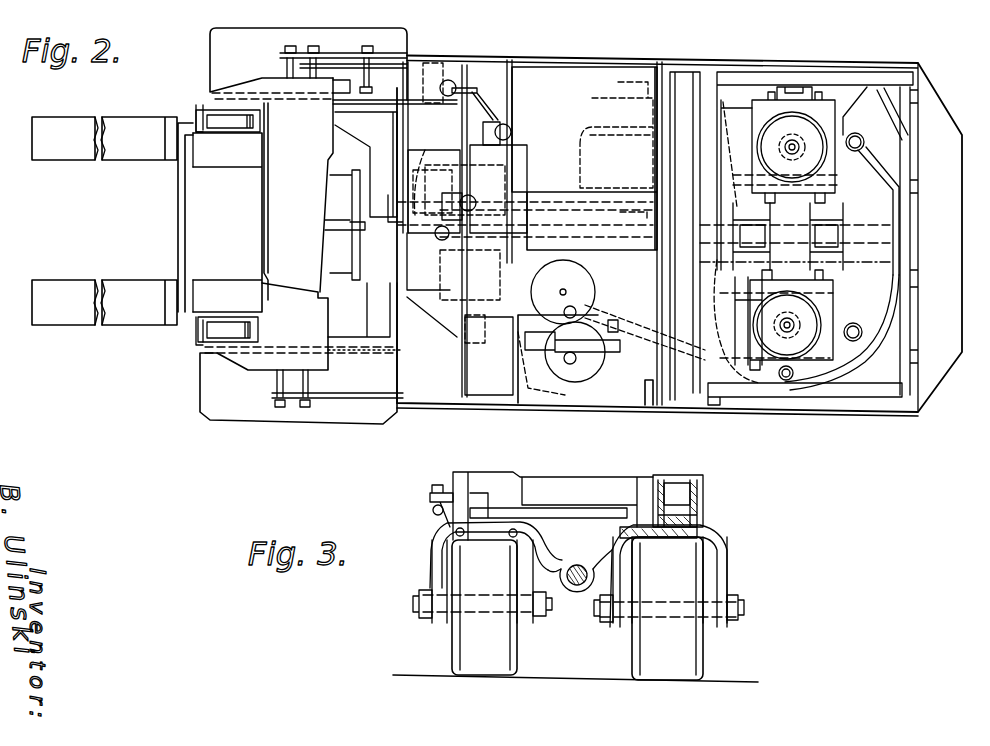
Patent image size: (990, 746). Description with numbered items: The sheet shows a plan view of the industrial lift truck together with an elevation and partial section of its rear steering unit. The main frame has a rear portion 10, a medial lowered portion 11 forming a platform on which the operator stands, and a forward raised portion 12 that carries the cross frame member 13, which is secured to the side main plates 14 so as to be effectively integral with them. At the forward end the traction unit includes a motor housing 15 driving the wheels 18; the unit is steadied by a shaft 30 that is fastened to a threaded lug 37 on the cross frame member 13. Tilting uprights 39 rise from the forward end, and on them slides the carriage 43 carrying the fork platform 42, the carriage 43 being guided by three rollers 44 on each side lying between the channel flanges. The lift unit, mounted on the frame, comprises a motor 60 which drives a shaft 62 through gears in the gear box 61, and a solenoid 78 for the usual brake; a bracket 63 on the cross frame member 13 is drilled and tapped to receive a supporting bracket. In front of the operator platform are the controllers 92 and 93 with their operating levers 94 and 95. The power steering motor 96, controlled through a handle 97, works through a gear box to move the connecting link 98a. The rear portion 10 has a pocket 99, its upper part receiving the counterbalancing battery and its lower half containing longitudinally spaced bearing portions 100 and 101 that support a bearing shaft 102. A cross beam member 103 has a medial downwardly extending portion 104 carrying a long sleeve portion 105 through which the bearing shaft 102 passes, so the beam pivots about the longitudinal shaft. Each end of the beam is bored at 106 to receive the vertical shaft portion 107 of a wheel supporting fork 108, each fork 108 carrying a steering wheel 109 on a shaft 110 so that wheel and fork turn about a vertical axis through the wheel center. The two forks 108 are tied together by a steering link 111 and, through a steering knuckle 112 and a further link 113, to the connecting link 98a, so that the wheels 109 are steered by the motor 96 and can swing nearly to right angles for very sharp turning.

In FIG. 2, the rear portion 10 is at (867, 412).
In FIG. 2, the medial lowered portion 11 is at (628, 402).
In FIG. 2, the forward raised portion 12 is at (403, 405).
In FIG. 2, the cross frame member 13 is at (380, 152).
In FIG. 2, the side main plates 14 is at (574, 58).
In FIG. 2, the motor housing 15 is at (337, 173).
In FIG. 2, the wheels 18 is at (365, 34).
In FIG. 2, the shaft 30 is at (338, 230).
In FIG. 2, the threaded lug 37 is at (370, 217).
In FIG. 2, the uprights 39 is at (198, 110).
In FIG. 2, the fork platform 42 is at (178, 212).
In FIG. 2, the carriage 43 is at (200, 138).
In FIG. 2, the rollers 44 is at (210, 110).
In FIG. 2, the motor 60 is at (590, 143).
In FIG. 2, the gear box 61 is at (545, 195).
In FIG. 2, the shaft 62 is at (473, 173).
In FIG. 2, the bracket 63 is at (470, 148).
In FIG. 2, the solenoid 78 is at (540, 287).
In FIG. 2, the controller 92 is at (420, 153).
In FIG. 2, the controller 93 is at (405, 287).
In FIG. 2, the operating lever 94 is at (476, 205).
In FIG. 2, the operating lever 95 is at (468, 233).
In FIG. 2, the power steering motor 96 is at (577, 387).
In FIG. 2, the handle 97 is at (608, 352).
In FIG. 2, the connecting link 98a is at (618, 325).
In FIG. 2, the pocket 99 is at (866, 85).
In FIG. 2, the bearing portion 100 is at (873, 210).
In FIG. 2, the bearing portion 101 is at (670, 195).
In FIG. 2, the bearing shaft 102 is at (893, 260).
In FIG. 3, the bearing shaft 102 is at (577, 586).
In FIG. 2, the cross beam member 103 is at (827, 292).
In FIG. 3, the cross beam member 103 is at (705, 490).
In FIG. 2, the medial downwardly extending portion 104 is at (770, 254).
In FIG. 3, the medial downwardly extending portion 104 is at (562, 553).
In FIG. 2, the sleeve portion 105 is at (757, 222).
In FIG. 3, the sleeve portion 105 is at (587, 597).
In FIG. 3, the bore 106 is at (690, 482).
In FIG. 2, the vertical shaft portion 107 is at (790, 153).
In FIG. 3, the vertical shaft portion 107 is at (668, 485).
In FIG. 2, the wheel supporting fork 108 is at (762, 98).
In FIG. 3, the wheel supporting fork 108 is at (430, 555).
In FIG. 2, the steering wheel 109 is at (855, 163).
In FIG. 3, the steering wheel 109 is at (467, 667).
In FIG. 3, the shaft 110 is at (465, 613).
In FIG. 2, the steering link 111 is at (890, 240).
In FIG. 3, the steering link 111 is at (537, 505).
In FIG. 2, the steering knuckle 112 is at (790, 387).
In FIG. 3, the steering knuckle 112 is at (432, 510).
In FIG. 2, the link 113 is at (750, 380).